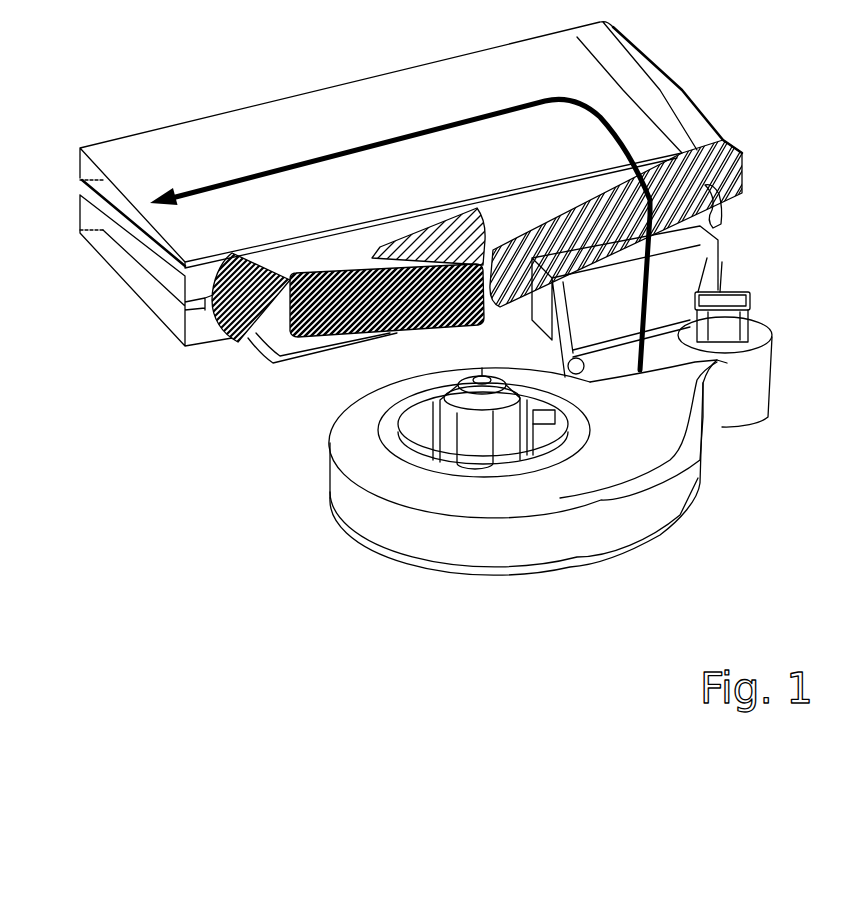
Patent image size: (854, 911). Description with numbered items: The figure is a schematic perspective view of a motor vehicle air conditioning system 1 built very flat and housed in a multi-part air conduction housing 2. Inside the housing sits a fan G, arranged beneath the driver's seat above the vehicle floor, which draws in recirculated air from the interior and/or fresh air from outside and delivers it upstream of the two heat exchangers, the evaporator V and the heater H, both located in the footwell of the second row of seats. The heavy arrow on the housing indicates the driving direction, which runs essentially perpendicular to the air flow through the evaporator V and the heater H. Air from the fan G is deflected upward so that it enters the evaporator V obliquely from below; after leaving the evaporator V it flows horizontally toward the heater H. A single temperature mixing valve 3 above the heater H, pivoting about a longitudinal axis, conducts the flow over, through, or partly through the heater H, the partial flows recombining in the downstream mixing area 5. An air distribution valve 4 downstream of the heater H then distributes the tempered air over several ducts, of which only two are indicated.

The motor vehicle air conditioning system 1 is at (210, 603).
The air conduction housing 2 is at (368, 107).
The temperature mixing valve 3 is at (462, 212).
The air distribution valve 4 is at (215, 318).
The mixing area 5 is at (268, 328).
The heater H is at (342, 320).
The evaporator V is at (722, 143).
The fan G is at (488, 523).